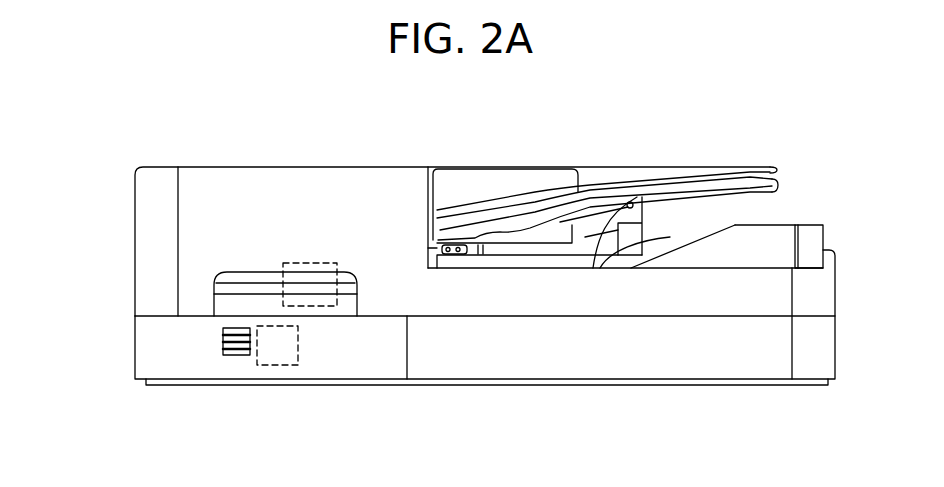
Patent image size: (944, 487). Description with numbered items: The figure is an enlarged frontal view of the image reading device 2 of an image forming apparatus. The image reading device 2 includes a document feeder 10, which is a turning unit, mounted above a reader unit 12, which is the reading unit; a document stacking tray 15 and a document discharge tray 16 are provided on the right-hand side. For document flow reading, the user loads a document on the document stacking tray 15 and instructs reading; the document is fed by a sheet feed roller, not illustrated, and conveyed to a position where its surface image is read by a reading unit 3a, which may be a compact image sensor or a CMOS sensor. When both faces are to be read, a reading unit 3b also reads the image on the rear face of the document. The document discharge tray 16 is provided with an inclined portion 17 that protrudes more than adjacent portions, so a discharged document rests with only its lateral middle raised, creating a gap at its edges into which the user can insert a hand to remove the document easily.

The image reading device 2 is at (63, 190).
The document feeder 10 is at (135, 231).
The reader unit 12 is at (135, 349).
The reading unit 3a is at (298, 347).
The reading unit 3b is at (317, 262).
The document stacking tray 15 is at (610, 176).
The document discharge tray 16 is at (655, 214).
The inclined portion 17 is at (807, 225).